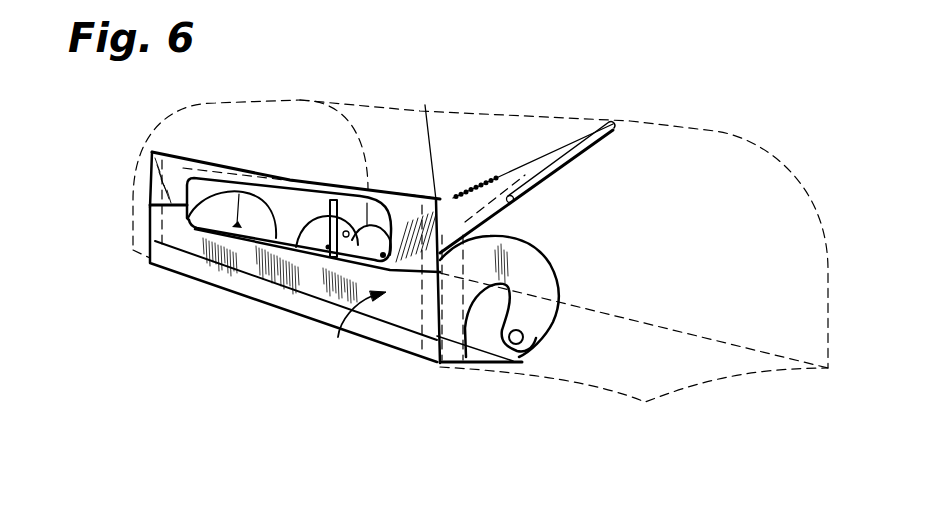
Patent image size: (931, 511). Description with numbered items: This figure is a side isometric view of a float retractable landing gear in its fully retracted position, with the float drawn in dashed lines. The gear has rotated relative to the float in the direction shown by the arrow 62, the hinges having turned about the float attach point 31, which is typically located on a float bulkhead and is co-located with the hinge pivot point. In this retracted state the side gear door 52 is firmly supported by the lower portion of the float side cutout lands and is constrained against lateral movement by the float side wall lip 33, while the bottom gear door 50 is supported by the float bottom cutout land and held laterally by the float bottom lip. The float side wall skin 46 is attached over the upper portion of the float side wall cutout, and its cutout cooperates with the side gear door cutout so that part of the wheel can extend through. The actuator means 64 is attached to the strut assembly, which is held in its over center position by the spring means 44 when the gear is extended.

The float attach point 31 is at (540, 340).
The float side wall lip 33 is at (148, 208).
The spring means 44 is at (540, 157).
The float side wall skin 46 is at (405, 150).
The bottom gear door 50 is at (487, 365).
The side gear door 52 is at (183, 243).
The arrow 62 is at (330, 320).
The actuator means 64 is at (570, 158).